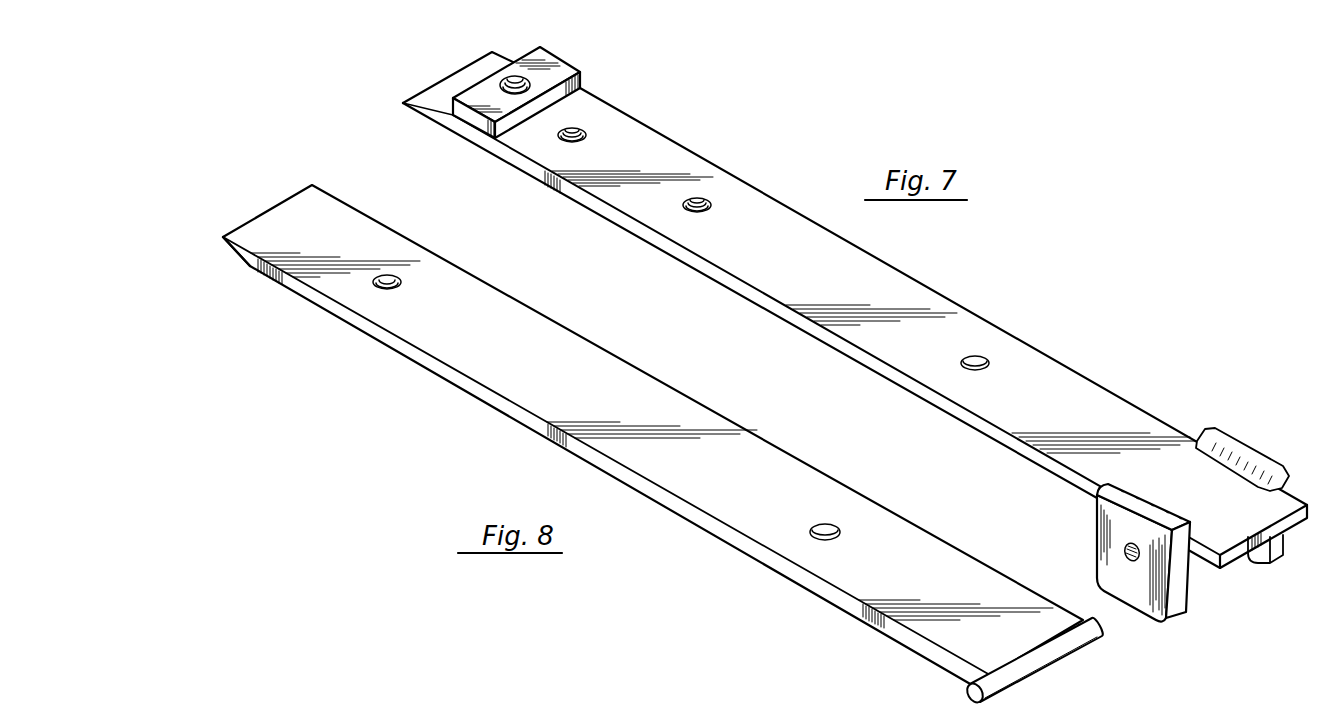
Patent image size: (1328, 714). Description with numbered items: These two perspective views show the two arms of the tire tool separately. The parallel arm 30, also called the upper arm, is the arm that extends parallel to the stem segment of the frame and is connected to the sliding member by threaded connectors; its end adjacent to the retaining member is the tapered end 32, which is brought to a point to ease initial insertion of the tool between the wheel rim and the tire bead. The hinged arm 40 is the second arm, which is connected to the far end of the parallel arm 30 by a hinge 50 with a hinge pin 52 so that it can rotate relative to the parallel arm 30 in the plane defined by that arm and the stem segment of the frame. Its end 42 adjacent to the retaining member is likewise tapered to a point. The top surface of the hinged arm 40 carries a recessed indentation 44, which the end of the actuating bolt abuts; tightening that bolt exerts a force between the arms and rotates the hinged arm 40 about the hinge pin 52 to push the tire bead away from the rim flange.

In FIG. 7, the parallel arm 30 is at (893, 288).
In FIG. 7, the tapered end of parallel arm 32 is at (442, 92).
In FIG. 8, the hinged arm 40 is at (523, 388).
In FIG. 8, the tapered end of hinged arm 42 is at (237, 253).
In FIG. 8, the recessed indentation 44 is at (390, 288).
In FIG. 7, the hinge 50 is at (1163, 595).
In FIG. 8, the hinge pin 52 is at (1098, 633).